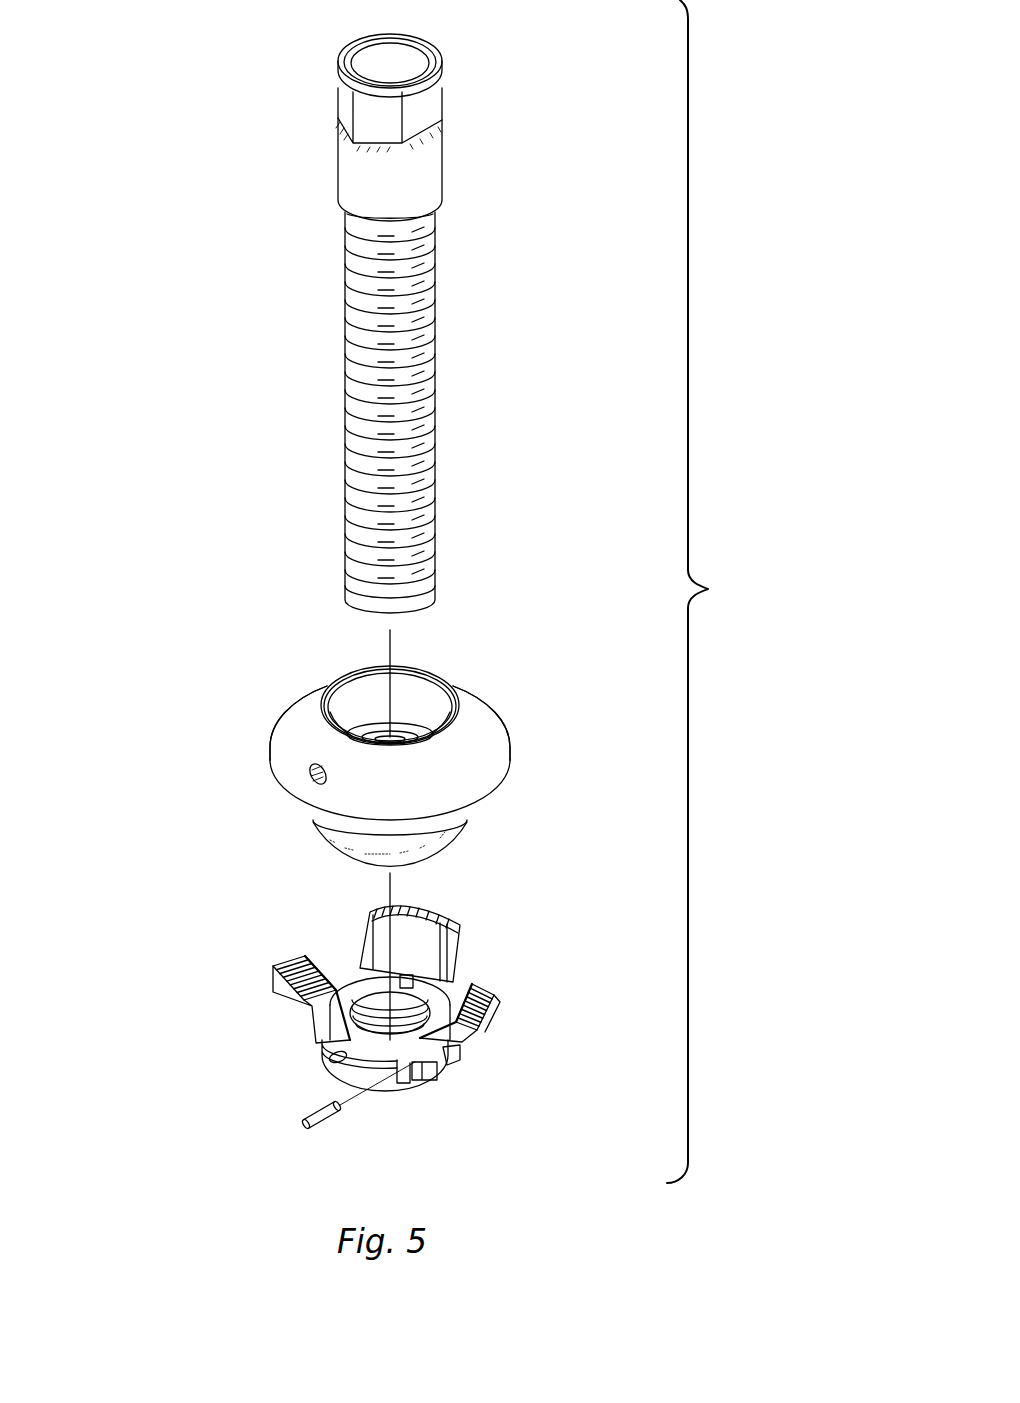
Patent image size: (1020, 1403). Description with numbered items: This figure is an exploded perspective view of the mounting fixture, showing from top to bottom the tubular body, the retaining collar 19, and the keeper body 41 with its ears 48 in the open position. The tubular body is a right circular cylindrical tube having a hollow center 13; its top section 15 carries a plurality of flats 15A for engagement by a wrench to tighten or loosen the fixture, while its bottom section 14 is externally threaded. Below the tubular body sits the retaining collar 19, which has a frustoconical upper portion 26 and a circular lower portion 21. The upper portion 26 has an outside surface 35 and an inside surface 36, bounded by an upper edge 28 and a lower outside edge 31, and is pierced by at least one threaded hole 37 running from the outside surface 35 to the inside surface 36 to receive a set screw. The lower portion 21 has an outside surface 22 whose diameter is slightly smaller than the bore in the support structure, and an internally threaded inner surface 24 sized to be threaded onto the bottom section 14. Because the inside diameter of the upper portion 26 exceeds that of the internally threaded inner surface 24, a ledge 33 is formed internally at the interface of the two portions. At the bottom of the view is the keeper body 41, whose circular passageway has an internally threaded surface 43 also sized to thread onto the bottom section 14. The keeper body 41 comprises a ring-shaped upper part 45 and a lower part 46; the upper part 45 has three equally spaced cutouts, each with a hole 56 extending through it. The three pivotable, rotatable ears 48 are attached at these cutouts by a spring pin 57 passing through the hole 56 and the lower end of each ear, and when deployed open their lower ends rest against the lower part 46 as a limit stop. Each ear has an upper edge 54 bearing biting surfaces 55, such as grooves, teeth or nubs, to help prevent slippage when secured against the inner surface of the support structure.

The hollow center 13 is at (390, 62).
The flats 15A is at (430, 118).
The top section 15 is at (338, 155).
The bottom section 14 is at (345, 420).
The retaining collar 19 is at (479, 700).
The upper portion 26 is at (280, 715).
The outside surface 35 is at (492, 742).
The upper edge 28 is at (447, 680).
The ledge 33 is at (372, 724).
The inside surface 36 is at (368, 687).
The internally threaded inner surface 24 is at (393, 737).
The threaded hole 37 is at (312, 772).
The lower outside edge 31 is at (493, 803).
The lower portion 21 is at (327, 838).
The outside surface 22 is at (443, 843).
The keeper body 41 is at (340, 1080).
The internally threaded surface 43 is at (372, 997).
The ears 48 is at (455, 970).
The biting surfaces 55 is at (452, 906).
The upper edge 54 is at (272, 978).
The upper part 45 is at (495, 995).
The lower part 46 is at (438, 1080).
The hole 56 is at (415, 1080).
The spring pin 57 is at (320, 1130).